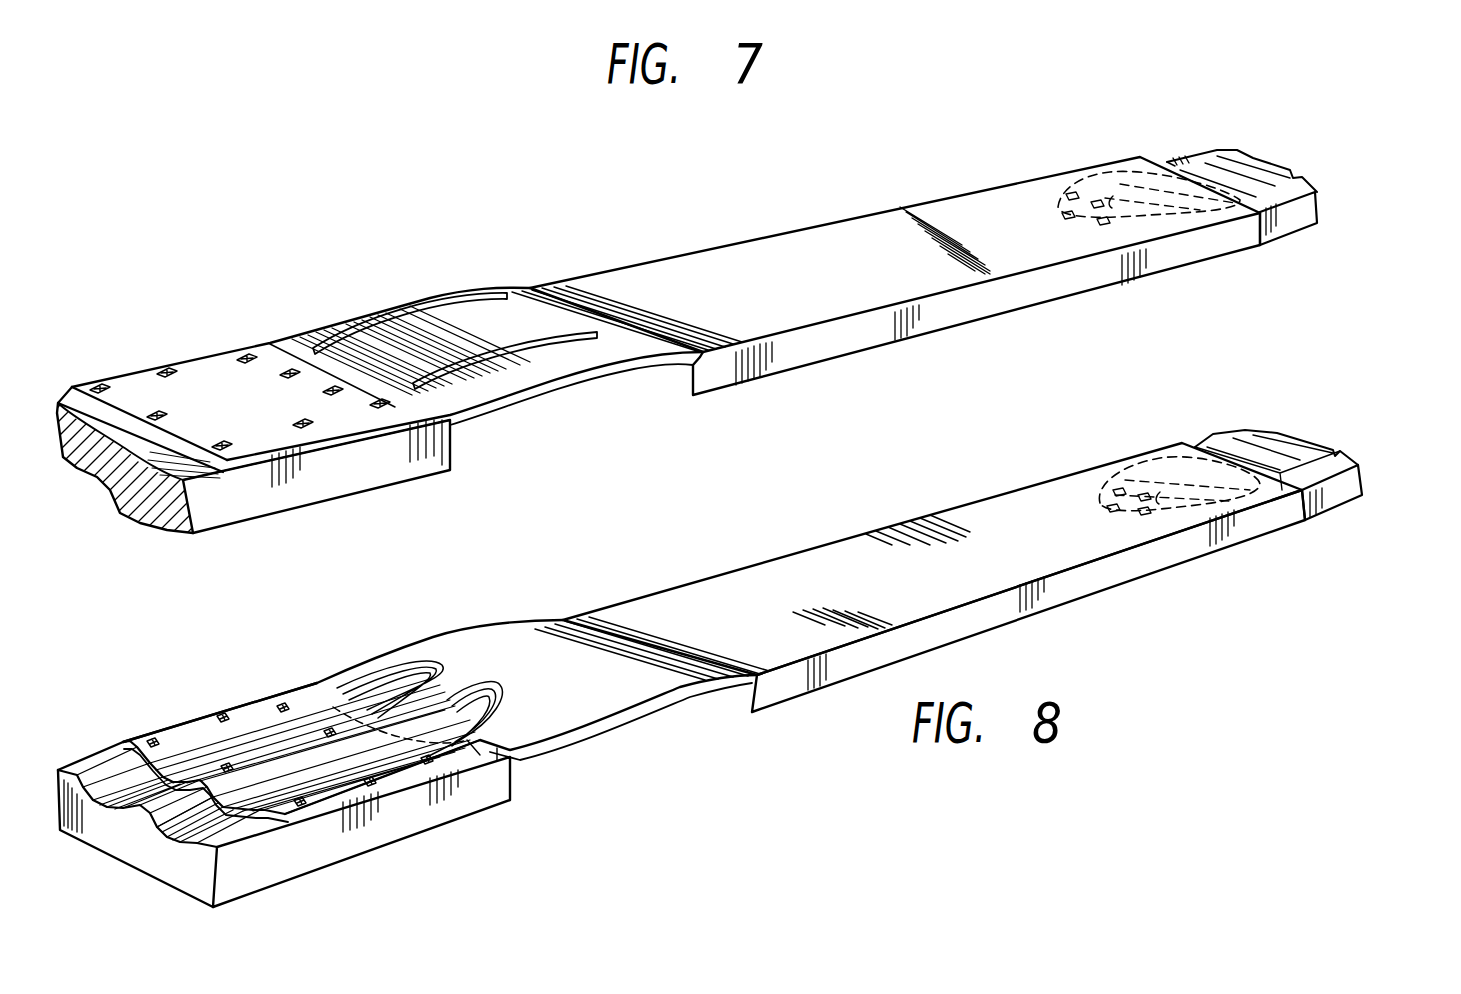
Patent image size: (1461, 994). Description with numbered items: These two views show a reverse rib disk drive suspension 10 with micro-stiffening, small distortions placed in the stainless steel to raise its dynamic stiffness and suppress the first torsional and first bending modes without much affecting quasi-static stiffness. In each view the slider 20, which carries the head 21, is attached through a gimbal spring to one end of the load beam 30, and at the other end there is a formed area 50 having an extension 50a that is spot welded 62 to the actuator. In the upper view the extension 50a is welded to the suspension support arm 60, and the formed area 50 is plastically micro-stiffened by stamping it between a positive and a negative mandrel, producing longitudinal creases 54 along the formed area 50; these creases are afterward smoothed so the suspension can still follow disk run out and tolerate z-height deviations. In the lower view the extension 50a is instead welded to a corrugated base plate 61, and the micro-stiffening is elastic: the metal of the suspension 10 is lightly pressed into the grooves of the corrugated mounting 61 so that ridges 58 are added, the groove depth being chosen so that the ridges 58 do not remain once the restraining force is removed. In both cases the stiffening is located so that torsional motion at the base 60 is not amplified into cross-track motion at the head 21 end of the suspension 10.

In FIG. 7, the suspension 10 is at (667, 438).
In FIG. 8, the suspension 10 is at (698, 727).
In FIG. 7, the slider 20 is at (1310, 213).
In FIG. 8, the slider 20 is at (1340, 494).
In FIG. 7, the head 21 is at (1112, 157).
In FIG. 8, the head 21 is at (1157, 455).
In FIG. 7, the load beam 30 is at (1105, 267).
In FIG. 8, the load beam 30 is at (1193, 535).
In FIG. 7, the formed area 50 is at (380, 373).
In FIG. 8, the formed area 50 is at (440, 729).
In FIG. 7, the extension 50a is at (355, 432).
In FIG. 8, the extension 50a is at (413, 782).
In FIG. 7, the longitudinal creases 54 is at (397, 305).
In FIG. 8, the ridges 58 is at (180, 768).
In FIG. 7, the suspension support arm 60 is at (257, 495).
In FIG. 8, the corrugated base plate 61 is at (340, 835).
In FIG. 7, the spot welds 62 is at (168, 368).
In FIG. 8, the spot welds 62 is at (283, 708).